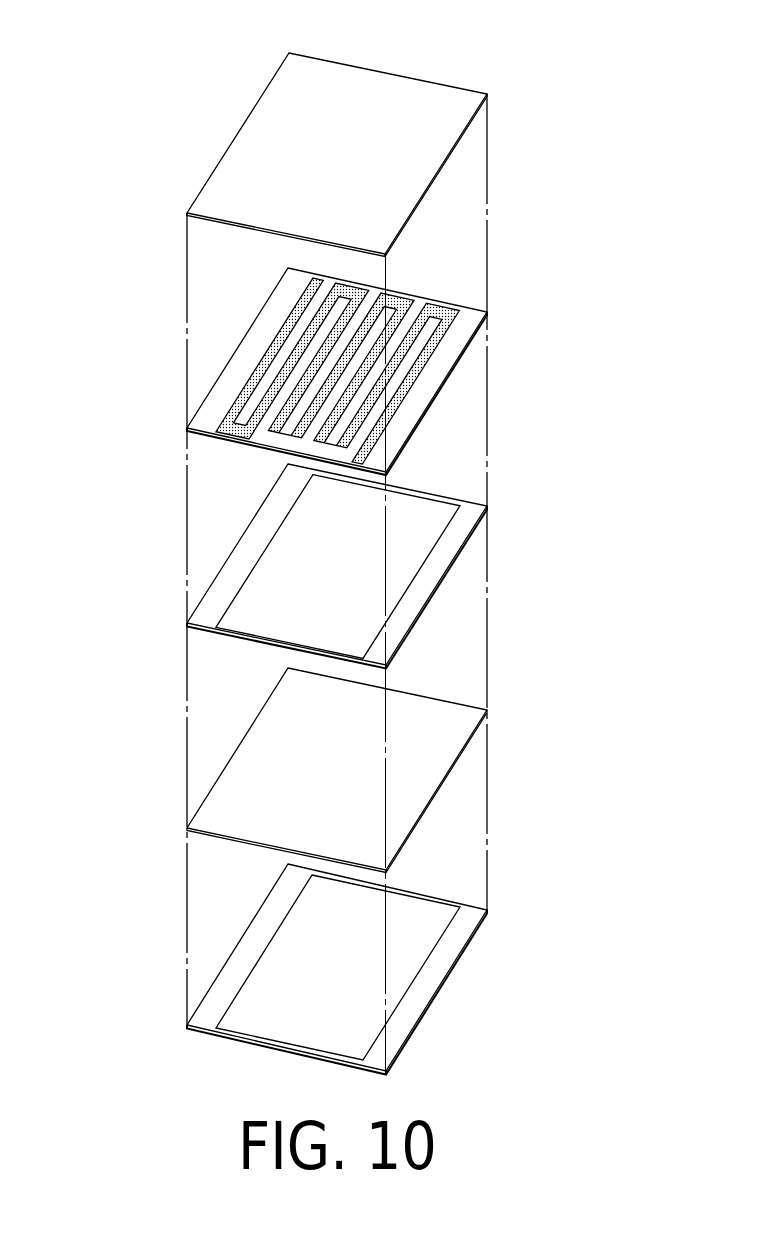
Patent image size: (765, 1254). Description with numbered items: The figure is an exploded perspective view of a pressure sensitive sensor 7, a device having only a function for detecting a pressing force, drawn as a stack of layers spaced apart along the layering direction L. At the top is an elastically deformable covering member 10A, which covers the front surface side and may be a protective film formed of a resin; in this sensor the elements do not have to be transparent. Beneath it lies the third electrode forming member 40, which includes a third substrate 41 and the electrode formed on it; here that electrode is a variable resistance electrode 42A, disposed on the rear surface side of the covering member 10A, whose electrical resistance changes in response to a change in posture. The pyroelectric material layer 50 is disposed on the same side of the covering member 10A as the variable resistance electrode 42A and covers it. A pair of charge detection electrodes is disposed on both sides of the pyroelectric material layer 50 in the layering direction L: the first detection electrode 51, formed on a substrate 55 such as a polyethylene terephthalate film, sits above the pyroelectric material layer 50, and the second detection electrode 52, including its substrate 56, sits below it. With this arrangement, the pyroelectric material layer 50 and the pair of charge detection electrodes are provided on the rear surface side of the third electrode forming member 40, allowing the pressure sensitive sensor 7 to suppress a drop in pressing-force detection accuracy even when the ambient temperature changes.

The pressure sensitive sensor 7 is at (142, 120).
The covering member 10A is at (468, 108).
The third electrode forming member 40 is at (342, 371).
The third substrate 41 is at (465, 347).
The variable resistance electrode 42A is at (255, 365).
The first detection electrode 51 is at (262, 597).
The substrate 55 is at (339, 566).
The pyroelectric material layer 50 is at (448, 738).
The second detection electrode 52 is at (265, 983).
The substrate 56 is at (328, 969).
The layering direction L is at (518, 622).